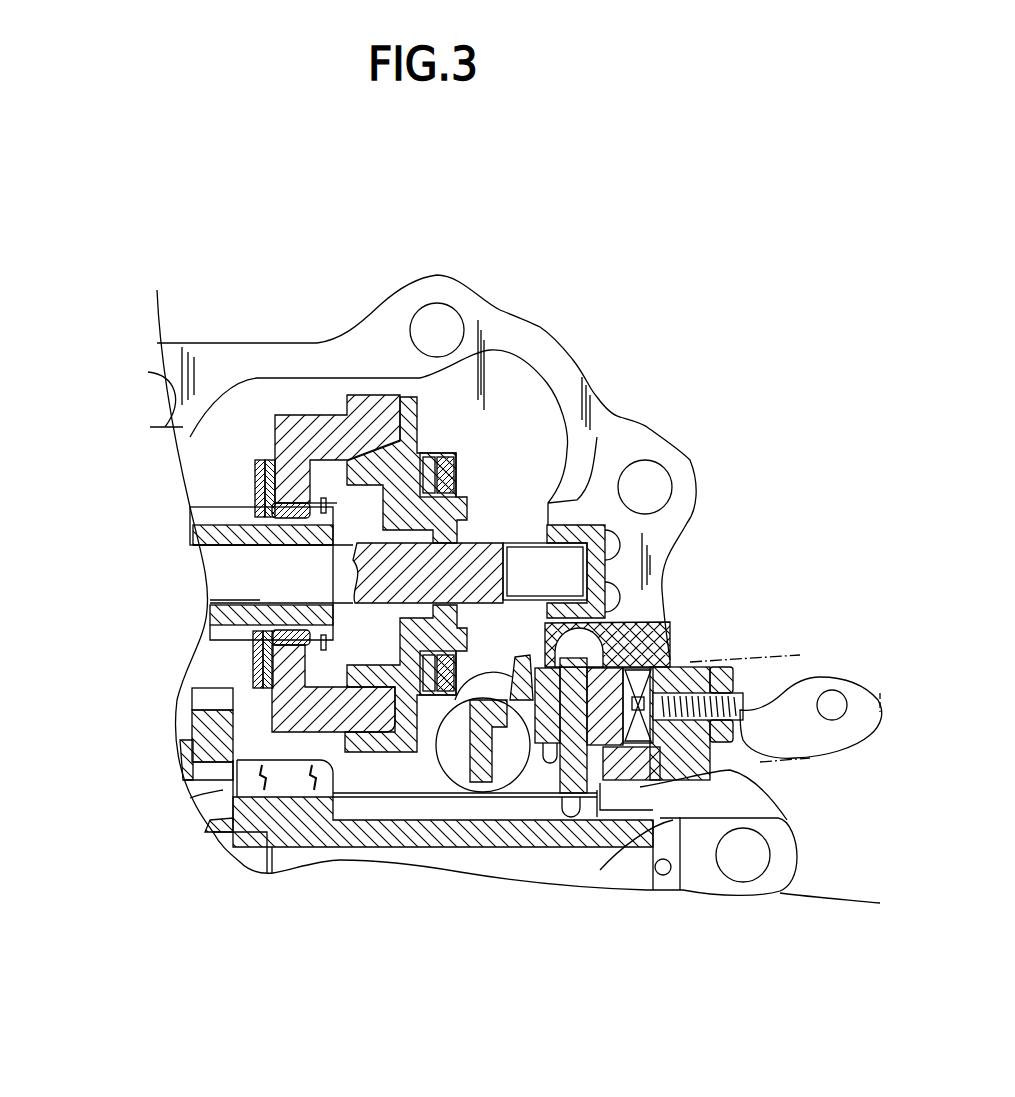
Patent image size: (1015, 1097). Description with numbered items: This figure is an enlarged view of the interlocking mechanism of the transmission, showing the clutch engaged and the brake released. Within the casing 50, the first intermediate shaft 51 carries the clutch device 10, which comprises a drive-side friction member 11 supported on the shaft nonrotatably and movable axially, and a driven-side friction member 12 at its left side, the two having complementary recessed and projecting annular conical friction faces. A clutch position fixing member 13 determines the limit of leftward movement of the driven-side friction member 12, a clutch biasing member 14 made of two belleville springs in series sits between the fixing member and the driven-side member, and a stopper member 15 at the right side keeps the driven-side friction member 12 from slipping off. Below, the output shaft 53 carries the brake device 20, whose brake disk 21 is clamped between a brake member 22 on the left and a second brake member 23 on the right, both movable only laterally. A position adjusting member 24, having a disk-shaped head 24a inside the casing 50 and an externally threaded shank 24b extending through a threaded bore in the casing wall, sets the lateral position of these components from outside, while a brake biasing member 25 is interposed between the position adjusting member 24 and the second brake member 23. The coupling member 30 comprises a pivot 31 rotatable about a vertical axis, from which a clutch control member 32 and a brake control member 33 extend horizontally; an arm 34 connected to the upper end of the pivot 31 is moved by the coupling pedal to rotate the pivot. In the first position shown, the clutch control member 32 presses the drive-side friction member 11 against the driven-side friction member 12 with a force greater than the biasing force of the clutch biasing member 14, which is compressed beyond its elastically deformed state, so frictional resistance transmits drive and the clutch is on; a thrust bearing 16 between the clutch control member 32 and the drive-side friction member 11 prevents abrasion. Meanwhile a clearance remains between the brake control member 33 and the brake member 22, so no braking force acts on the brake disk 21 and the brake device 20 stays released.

The clutch device 10 is at (440, 418).
The drive-side friction member 11 is at (365, 405).
The driven-side friction member 12 is at (313, 420).
The clutch position fixing member 13 is at (257, 462).
The clutch biasing member 14 is at (260, 460).
The stopper member 15 is at (313, 500).
The thrust bearing 16 is at (470, 672).
The brake device 20 is at (730, 773).
The brake disk 21 is at (653, 627).
The brake member 22 is at (607, 610).
The second brake member 23 is at (637, 633).
The position adjusting member 24 is at (924, 640).
The head 24a is at (695, 662).
The shank 24b is at (815, 653).
The brake biasing member 25 is at (675, 635).
The coupling member 30 is at (655, 300).
The pivot 31 is at (513, 693).
The clutch control member 32 is at (465, 690).
The brake control member 33 is at (572, 445).
The arm 34 is at (850, 733).
The casing 50 is at (183, 427).
The first intermediate shaft 51 is at (230, 573).
The output shaft 53 is at (297, 833).